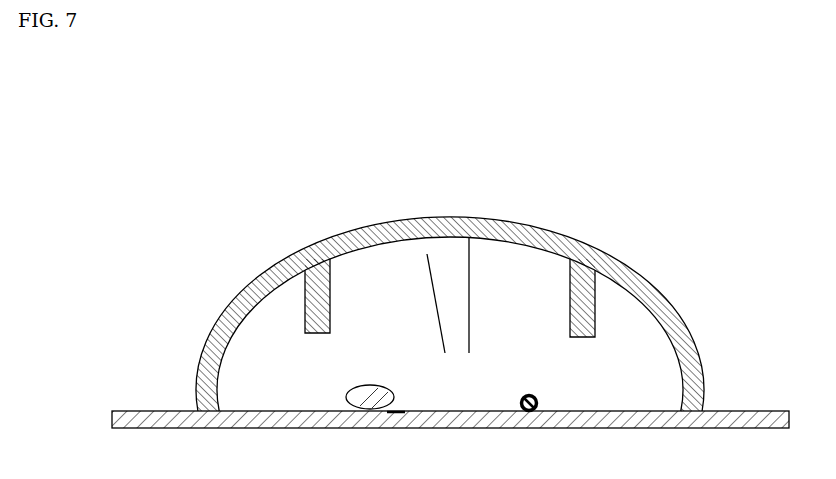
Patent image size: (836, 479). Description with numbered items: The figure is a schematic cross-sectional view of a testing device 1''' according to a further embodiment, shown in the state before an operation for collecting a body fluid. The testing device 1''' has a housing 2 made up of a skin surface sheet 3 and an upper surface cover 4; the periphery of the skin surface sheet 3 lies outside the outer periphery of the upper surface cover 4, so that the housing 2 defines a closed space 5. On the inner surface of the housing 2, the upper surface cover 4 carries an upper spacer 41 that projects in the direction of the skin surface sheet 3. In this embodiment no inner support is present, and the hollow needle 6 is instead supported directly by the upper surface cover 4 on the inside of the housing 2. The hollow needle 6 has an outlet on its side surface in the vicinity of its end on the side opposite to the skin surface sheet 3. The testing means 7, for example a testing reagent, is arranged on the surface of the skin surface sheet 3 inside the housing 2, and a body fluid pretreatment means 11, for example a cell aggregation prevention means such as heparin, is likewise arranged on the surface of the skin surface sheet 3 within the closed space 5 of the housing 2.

The testing device 1''' is at (462, 267).
The housing 2 is at (773, 280).
The skin surface sheet 3 is at (722, 411).
The upper surface cover 4 is at (682, 313).
The upper spacer 41 is at (598, 288).
The closed space 5 is at (280, 316).
The hollow needle 6 is at (469, 289).
The testing means 7 is at (395, 393).
The body fluid pretreatment means 11 is at (538, 402).